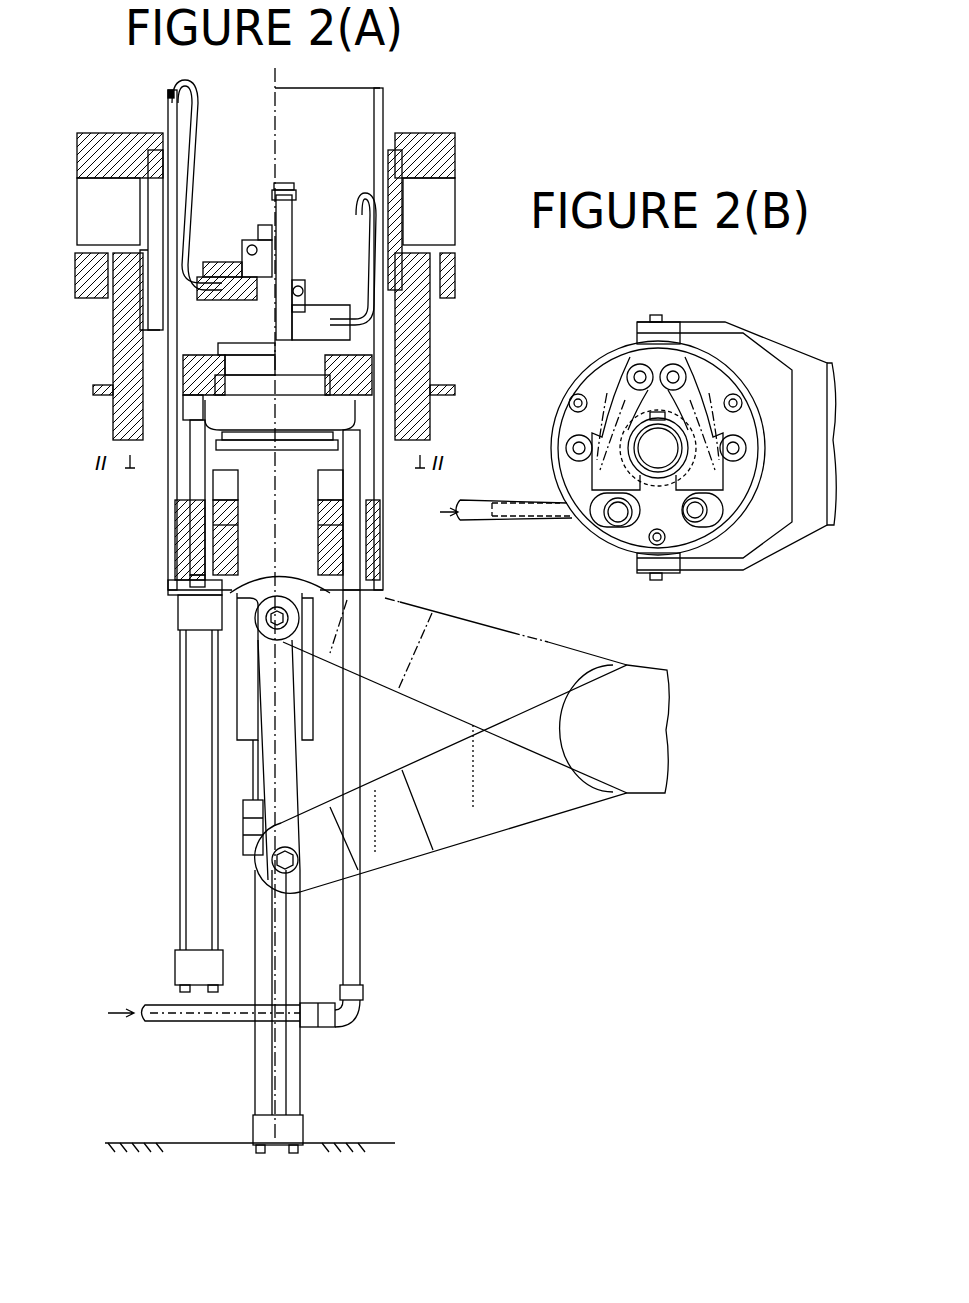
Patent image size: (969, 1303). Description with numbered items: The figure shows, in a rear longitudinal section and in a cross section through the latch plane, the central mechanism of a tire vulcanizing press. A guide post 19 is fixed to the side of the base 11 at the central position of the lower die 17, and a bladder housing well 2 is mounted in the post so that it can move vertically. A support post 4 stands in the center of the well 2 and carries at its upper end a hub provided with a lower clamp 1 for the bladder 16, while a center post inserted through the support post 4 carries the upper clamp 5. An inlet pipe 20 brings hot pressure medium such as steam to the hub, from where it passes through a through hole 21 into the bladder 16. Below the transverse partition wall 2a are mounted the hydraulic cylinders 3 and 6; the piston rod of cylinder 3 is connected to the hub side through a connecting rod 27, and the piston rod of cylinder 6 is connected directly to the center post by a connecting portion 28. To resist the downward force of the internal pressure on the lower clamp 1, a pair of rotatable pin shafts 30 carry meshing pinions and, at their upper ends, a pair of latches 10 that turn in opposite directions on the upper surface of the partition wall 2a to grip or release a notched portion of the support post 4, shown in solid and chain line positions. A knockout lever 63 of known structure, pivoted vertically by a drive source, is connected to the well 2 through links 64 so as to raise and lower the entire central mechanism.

In FIG. 2A, the lower clamp 1 is at (185, 362).
In FIG. 2A, the bladder housing well 2 is at (168, 115).
In FIG. 2B, the bladder housing well 2 is at (620, 552).
In FIG. 2A, the partition wall 2a is at (383, 535).
In FIG. 2B, the partition wall 2a is at (710, 378).
In FIG. 2A, the hydraulic cylinder 3 is at (198, 702).
In FIG. 2A, the support post 4 is at (313, 726).
In FIG. 2B, the support post 4 is at (640, 450).
In FIG. 2A, the upper clamp 5 is at (222, 262).
In FIG. 2A, the hydraulic cylinder 6 is at (290, 945).
In FIG. 2A, the latches 10 is at (213, 485).
In FIG. 2B, the latches 10 is at (605, 500).
In FIG. 2A, the base 11 is at (86, 300).
In FIG. 2A, the bladder 16 is at (198, 100).
In FIG. 2A, the lower die 17 is at (113, 357).
In FIG. 2B, the guide post 19 is at (680, 450).
In FIG. 2A, the inlet pipe 20 is at (350, 475).
In FIG. 2A, the through hole 21 is at (372, 368).
In FIG. 2A, the connecting rod 27 is at (185, 528).
In FIG. 2A, the connecting portion 28 is at (243, 806).
In FIG. 2B, the pin shafts 30 is at (636, 370).
In FIG. 2A, the knockout lever 63 is at (538, 822).
In FIG. 2B, the knockout lever 63 is at (818, 505).
In FIG. 2A, the links 64 is at (290, 695).
In FIG. 2B, the links 64 is at (638, 322).